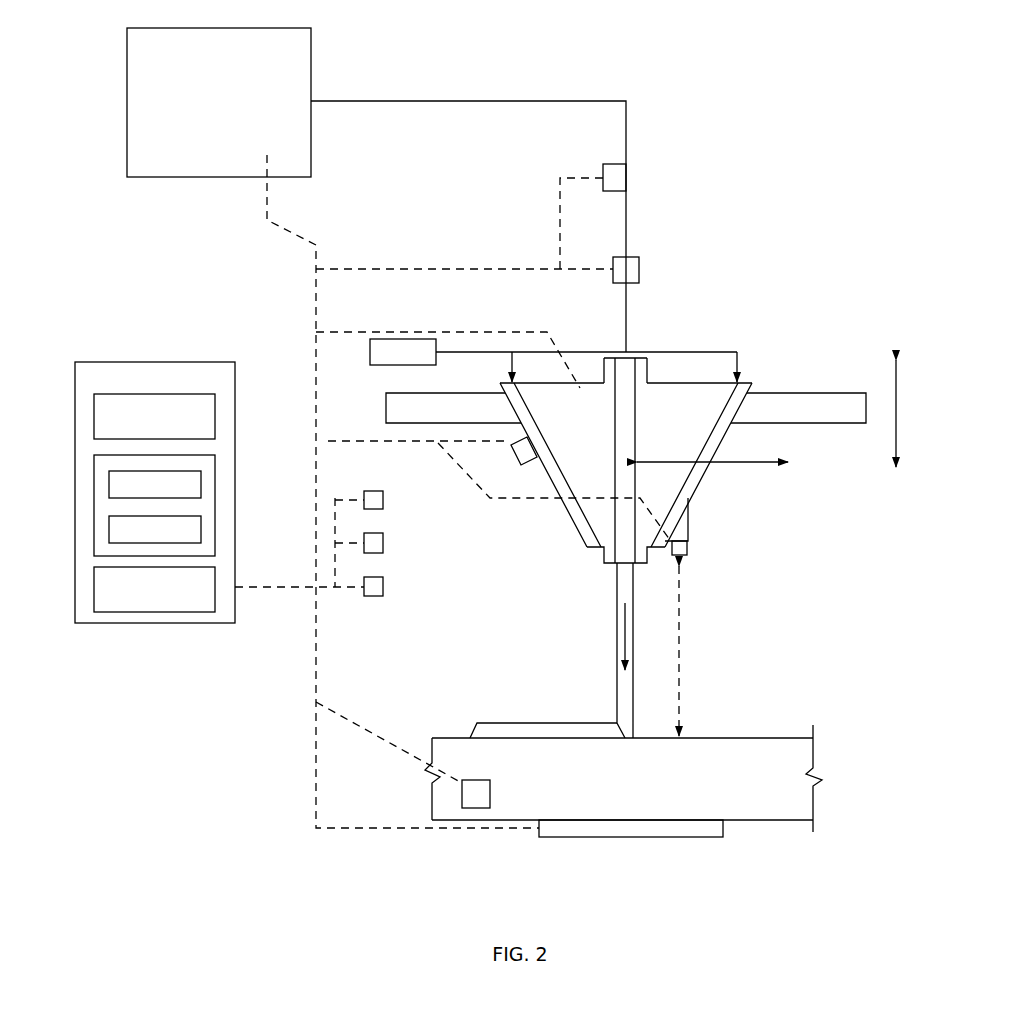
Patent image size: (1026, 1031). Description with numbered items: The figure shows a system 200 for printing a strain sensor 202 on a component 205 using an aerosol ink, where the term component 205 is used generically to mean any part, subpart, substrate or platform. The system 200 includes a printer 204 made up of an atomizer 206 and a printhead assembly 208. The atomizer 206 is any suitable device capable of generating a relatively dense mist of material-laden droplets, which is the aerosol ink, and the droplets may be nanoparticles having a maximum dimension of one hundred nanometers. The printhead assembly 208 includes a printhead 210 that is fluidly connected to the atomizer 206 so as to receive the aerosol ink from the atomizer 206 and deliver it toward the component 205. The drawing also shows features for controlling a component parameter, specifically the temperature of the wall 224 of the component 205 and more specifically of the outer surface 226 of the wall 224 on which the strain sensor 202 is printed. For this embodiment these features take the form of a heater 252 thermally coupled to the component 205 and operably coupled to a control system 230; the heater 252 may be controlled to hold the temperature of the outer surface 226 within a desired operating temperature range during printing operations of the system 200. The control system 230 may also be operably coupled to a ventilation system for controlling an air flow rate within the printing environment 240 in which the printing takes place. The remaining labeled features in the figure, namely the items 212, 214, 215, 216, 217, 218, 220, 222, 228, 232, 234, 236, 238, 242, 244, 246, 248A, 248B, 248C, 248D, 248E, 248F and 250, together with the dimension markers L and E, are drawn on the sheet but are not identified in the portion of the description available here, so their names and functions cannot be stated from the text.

The system 200 is at (662, 84).
The strain sensor 202 is at (538, 701).
The printer 204 is at (772, 272).
The component 205 is at (840, 717).
The atomizer 206 is at (199, 130).
The printhead assembly 208 is at (800, 378).
The printhead 210 is at (687, 383).
The feed line 212 is at (537, 101).
The support arm 214 is at (848, 414).
The gas source 215 is at (370, 351).
The shroud wall 216 is at (692, 481).
The valve 217 is at (613, 164).
The nozzle passage 218 is at (614, 428).
The nozzle outlet 220 is at (614, 572).
The material stream 222 is at (614, 622).
The wall 224 is at (752, 805).
The outer surface 226 is at (740, 733).
The standoff distance 228 is at (688, 648).
The control system 230 is at (228, 295).
The flow sensor 232 is at (639, 268).
The sensor 234 is at (519, 455).
The distance sensor 236 is at (690, 548).
The substrate sensor 238 is at (482, 795).
The printing environment 240 is at (447, 601).
The processor 242 is at (374, 491).
The memory 244 is at (374, 533).
The communication interface 246 is at (370, 597).
The control module 248A is at (128, 362).
The input module 248B is at (130, 429).
The processing module 248C is at (98, 455).
The sub-module 248D is at (109, 486).
The sub-module 248E is at (109, 529).
The output module 248F is at (130, 603).
The communication link 250 is at (285, 662).
The heater 252 is at (636, 838).
The lateral dimension L is at (762, 463).
The elevation direction E is at (897, 420).